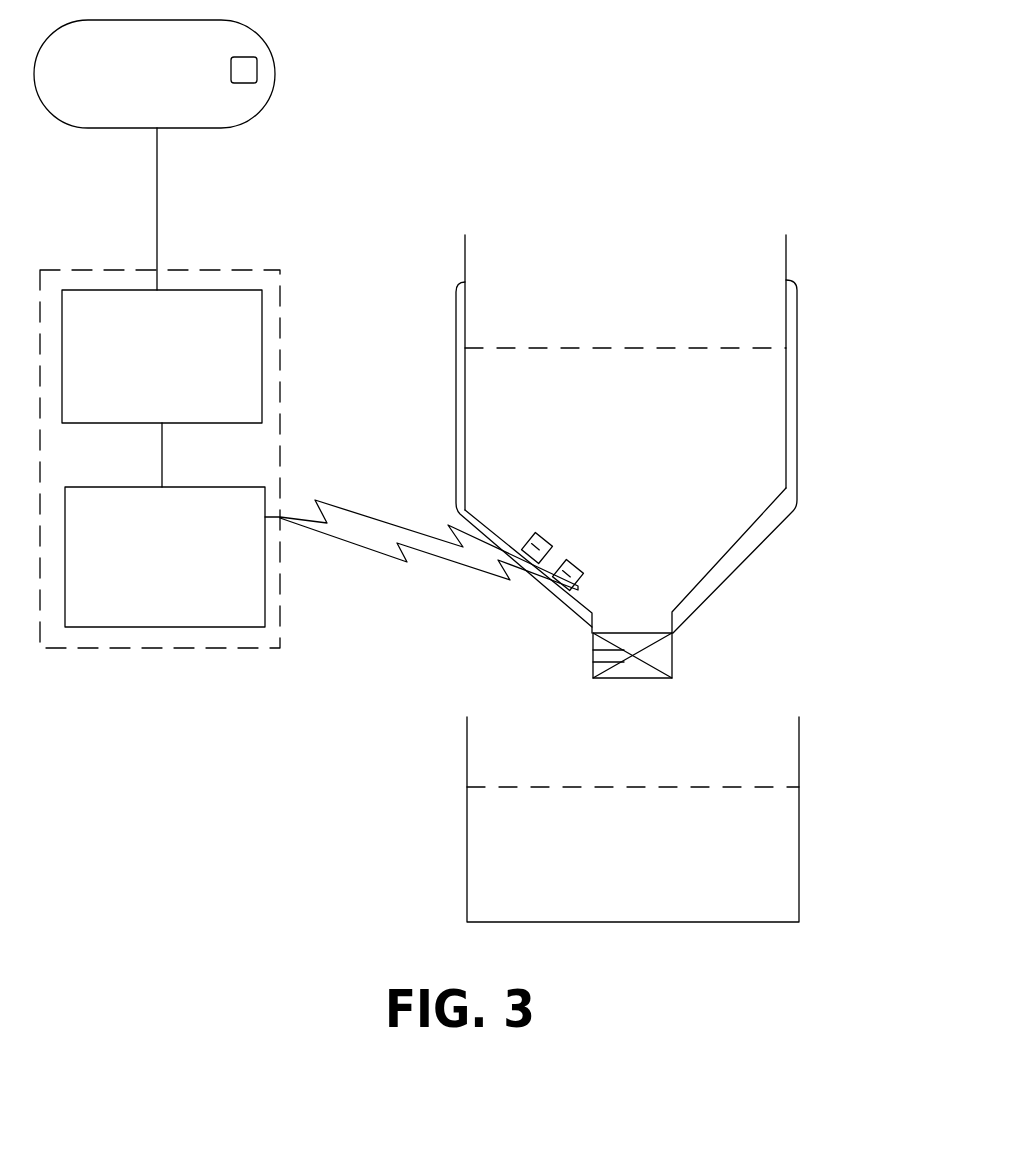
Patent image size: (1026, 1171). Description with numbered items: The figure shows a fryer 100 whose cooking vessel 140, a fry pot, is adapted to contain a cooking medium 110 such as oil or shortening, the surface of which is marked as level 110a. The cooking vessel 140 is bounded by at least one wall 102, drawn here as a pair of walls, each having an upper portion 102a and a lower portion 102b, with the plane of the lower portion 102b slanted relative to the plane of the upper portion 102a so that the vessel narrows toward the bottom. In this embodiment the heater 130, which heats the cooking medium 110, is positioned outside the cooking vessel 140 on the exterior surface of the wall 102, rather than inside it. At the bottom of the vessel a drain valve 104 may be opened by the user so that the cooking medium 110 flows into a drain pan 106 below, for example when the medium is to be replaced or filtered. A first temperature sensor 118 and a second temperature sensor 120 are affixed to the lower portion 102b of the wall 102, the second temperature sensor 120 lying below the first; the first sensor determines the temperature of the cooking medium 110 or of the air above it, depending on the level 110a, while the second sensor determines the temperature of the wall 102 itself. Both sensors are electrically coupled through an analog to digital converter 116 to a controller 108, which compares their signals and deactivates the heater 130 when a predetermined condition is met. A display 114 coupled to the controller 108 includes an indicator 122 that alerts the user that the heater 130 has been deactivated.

The fryer 100 is at (823, 218).
The wall 102 is at (625, 445).
The upper portion 102a is at (467, 422).
The lower portion 102b is at (570, 608).
The drain valve 104 is at (673, 657).
The drain pan 106 is at (800, 842).
The controller 108 is at (98, 423).
The cooking medium 110 is at (625, 322).
The level of cooking medium 110a is at (517, 348).
The display 114 is at (90, 128).
The analog to digital converter 116 is at (97, 627).
The first temperature sensor 118 is at (547, 532).
The second temperature sensor 120 is at (575, 567).
The indicator 122 is at (257, 66).
The heater 130 is at (458, 327).
The cooking vessel 140 is at (630, 286).